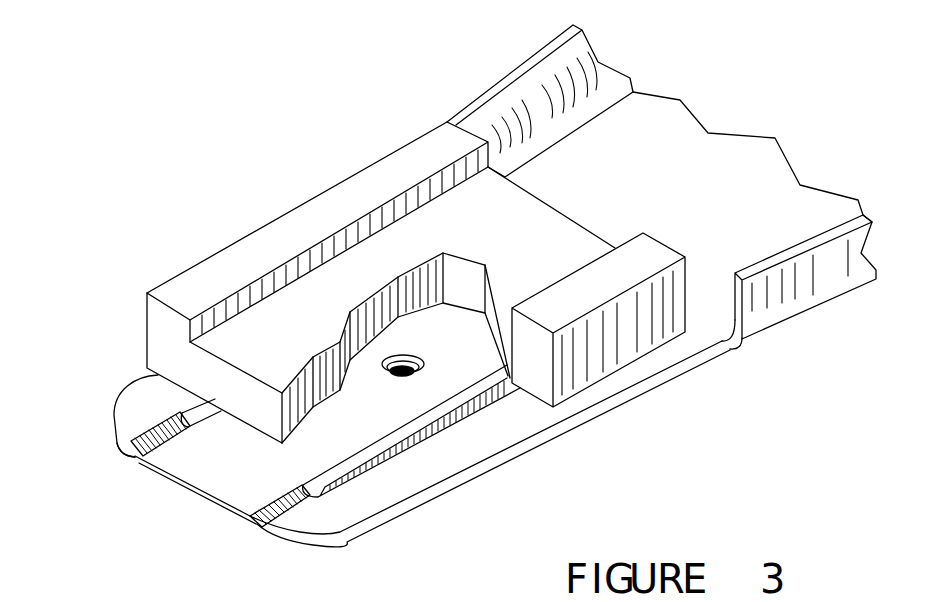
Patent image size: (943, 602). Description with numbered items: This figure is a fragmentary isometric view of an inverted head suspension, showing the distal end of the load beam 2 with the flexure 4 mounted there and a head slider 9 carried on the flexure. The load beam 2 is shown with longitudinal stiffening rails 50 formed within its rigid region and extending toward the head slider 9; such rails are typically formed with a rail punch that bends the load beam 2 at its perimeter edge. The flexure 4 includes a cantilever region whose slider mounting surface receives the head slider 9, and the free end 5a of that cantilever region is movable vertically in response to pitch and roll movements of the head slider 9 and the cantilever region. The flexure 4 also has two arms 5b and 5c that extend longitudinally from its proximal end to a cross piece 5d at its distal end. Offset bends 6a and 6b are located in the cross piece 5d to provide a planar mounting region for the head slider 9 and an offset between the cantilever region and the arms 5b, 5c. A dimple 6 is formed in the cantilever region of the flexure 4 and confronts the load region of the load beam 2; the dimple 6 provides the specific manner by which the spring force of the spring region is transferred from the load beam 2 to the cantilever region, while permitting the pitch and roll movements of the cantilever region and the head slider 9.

The load beam 2 is at (803, 290).
The flexure 4 is at (713, 295).
The free end 5a is at (465, 327).
The arm 5b is at (380, 501).
The arm 5c is at (157, 408).
The cross piece 5d is at (213, 468).
The dimple 6 is at (417, 375).
The offset bend 6a is at (263, 515).
The offset bend 6b is at (140, 452).
The head slider 9 is at (240, 255).
The longitudinal stiffening rail 50 is at (573, 50).